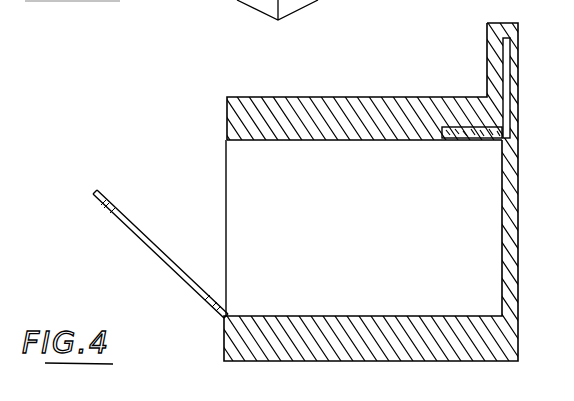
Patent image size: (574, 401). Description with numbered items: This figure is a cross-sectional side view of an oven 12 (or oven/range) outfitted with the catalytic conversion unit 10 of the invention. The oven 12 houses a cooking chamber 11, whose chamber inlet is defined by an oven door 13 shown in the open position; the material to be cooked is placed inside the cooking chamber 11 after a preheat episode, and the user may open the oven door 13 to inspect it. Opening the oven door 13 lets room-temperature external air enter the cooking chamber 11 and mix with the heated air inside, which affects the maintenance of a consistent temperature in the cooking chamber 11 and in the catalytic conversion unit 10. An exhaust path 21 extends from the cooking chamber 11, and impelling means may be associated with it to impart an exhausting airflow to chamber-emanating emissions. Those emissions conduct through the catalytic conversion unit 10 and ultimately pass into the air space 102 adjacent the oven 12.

The catalytic conversion unit 10 is at (458, 142).
The cooking chamber 11 is at (332, 231).
The oven 12 is at (255, 105).
The oven door 13 is at (92, 192).
The exhaust path 21 is at (487, 93).
The air space 102 is at (493, 3).